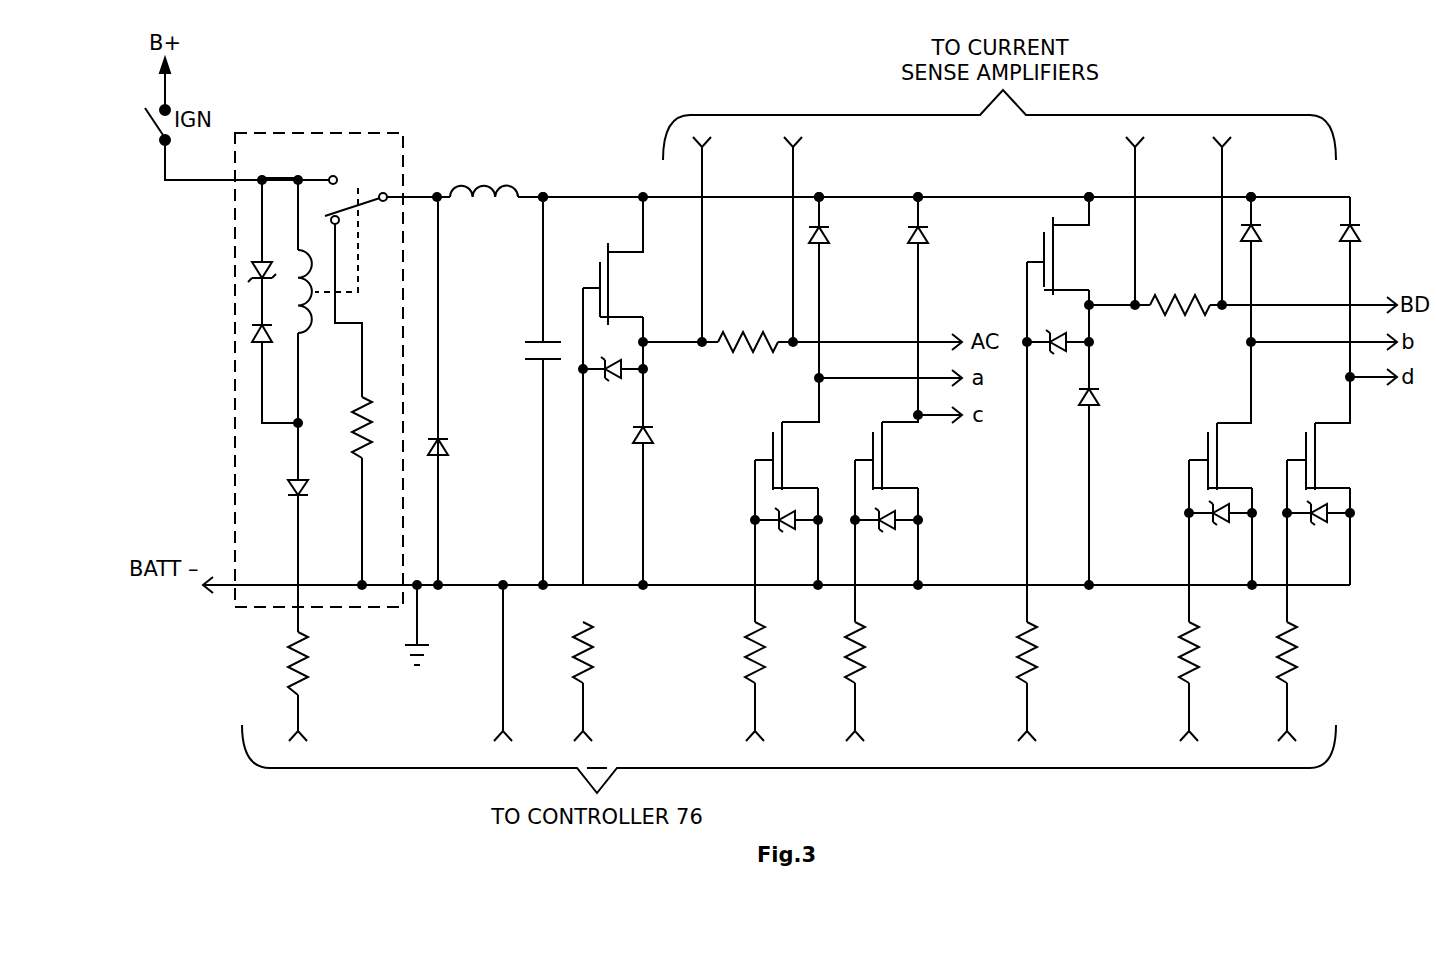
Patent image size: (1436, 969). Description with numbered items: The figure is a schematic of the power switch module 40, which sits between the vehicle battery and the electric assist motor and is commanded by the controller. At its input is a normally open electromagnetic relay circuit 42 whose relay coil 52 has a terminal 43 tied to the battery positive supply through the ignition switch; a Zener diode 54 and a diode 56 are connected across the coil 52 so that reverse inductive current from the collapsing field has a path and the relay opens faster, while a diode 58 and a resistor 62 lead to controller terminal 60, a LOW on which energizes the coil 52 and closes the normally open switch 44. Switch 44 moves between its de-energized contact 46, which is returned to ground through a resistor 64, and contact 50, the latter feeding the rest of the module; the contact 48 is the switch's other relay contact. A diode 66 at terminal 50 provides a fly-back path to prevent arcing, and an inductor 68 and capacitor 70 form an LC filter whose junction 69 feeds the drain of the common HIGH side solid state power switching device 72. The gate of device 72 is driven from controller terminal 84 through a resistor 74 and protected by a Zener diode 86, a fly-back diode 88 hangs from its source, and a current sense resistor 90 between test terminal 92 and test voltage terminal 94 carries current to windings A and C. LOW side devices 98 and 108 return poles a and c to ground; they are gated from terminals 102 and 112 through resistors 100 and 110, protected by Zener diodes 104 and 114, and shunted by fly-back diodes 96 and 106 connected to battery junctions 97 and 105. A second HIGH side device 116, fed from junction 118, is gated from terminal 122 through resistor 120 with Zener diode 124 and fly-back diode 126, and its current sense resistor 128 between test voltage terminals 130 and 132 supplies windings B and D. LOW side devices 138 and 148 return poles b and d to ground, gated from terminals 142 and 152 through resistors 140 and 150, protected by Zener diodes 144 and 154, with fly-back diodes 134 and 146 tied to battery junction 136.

The power switch module 40 is at (617, 119).
The electromagnetic relay circuit 42 is at (325, 133).
The terminal 43 is at (268, 178).
The switch 44 is at (363, 208).
The terminal 46 is at (340, 224).
The relay normally-closed contact 48 is at (337, 177).
The terminal 50 is at (388, 193).
The relay coil 52 is at (307, 312).
The Zener diode 54 is at (255, 270).
The diode 56 is at (255, 330).
The diode 58 is at (290, 480).
The terminal 60 is at (306, 742).
The resistor 62 is at (305, 652).
The resistor 64 is at (355, 425).
The diode 66 is at (447, 447).
The inductor 68 is at (480, 190).
The junction 69 is at (546, 194).
The capacitor 70 is at (532, 342).
The solid state power switching device 72 is at (607, 250).
The resistor 74 is at (590, 642).
The terminal 84 is at (588, 728).
The over-voltage protection Zener diode 86 is at (607, 380).
The fly-back diode 88 is at (652, 432).
The current sense resistor 90 is at (735, 340).
The test terminal 92 is at (706, 148).
The test voltage terminal 94 is at (800, 146).
The fly-back diode 96 is at (826, 240).
The junction 97 is at (822, 193).
The solid state power switching device 98 is at (780, 420).
The resistor 100 is at (770, 638).
The terminal 102 is at (766, 727).
The over-voltage protection Zener diode 104 is at (777, 530).
The junction 105 is at (921, 192).
The fly-back diode 106 is at (928, 236).
The solid state power switching device 108 is at (886, 444).
The resistor 110 is at (868, 638).
The terminal 112 is at (867, 727).
The over-voltage protection Zener diode 114 is at (877, 530).
The solid state power switching device 116 is at (1053, 218).
The junction 118 is at (1091, 192).
The resistor 120 is at (1037, 638).
The terminal 122 is at (1040, 727).
The over-voltage protection Zener diode 124 is at (1050, 355).
The fly-back diode 126 is at (1100, 403).
The current sense resistor 128 is at (1165, 300).
The test voltage terminal 130 is at (1142, 143).
The test voltage terminal 132 is at (1228, 143).
The fly-back diode 134 is at (1262, 237).
The junction 136 is at (1256, 193).
The solid state power switching device 138 is at (1213, 413).
The resistor 140 is at (1198, 638).
The terminal 142 is at (1200, 727).
The over-voltage protection Zener diode 144 is at (1212, 527).
The fly-back diode 146 is at (1362, 233).
The solid state power switching device 148 is at (1313, 418).
The resistor 150 is at (1300, 638).
The terminal 152 is at (1295, 727).
The over-voltage protection Zener diode 154 is at (1310, 527).